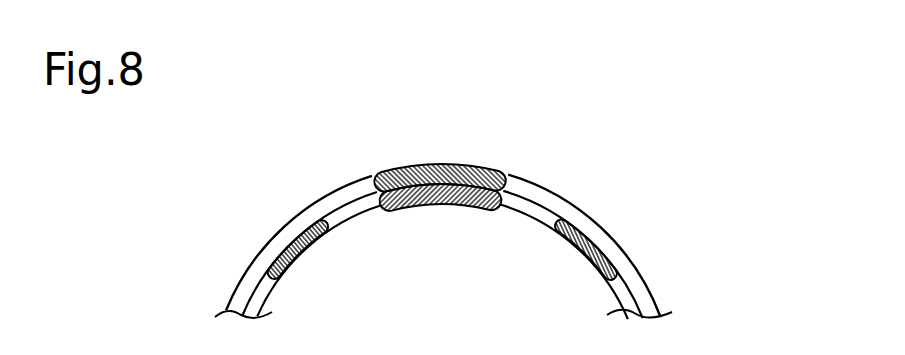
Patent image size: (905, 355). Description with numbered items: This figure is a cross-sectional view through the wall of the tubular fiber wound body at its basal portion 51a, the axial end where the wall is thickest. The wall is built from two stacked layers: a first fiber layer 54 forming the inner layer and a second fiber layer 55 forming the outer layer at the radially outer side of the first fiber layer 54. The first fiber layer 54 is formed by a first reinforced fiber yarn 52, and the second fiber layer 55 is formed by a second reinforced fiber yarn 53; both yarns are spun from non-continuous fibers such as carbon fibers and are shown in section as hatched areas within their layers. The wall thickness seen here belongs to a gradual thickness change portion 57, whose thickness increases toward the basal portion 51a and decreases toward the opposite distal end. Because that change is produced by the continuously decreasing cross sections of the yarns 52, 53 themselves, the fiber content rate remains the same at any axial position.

The basal portion 51a is at (633, 258).
The first reinforced fiber yarn 52 is at (447, 199).
The second reinforced fiber yarn 53 is at (450, 165).
The first fiber layer 54 is at (613, 288).
The second fiber layer 55 is at (589, 211).
The gradual thickness change portion 57 is at (666, 294).